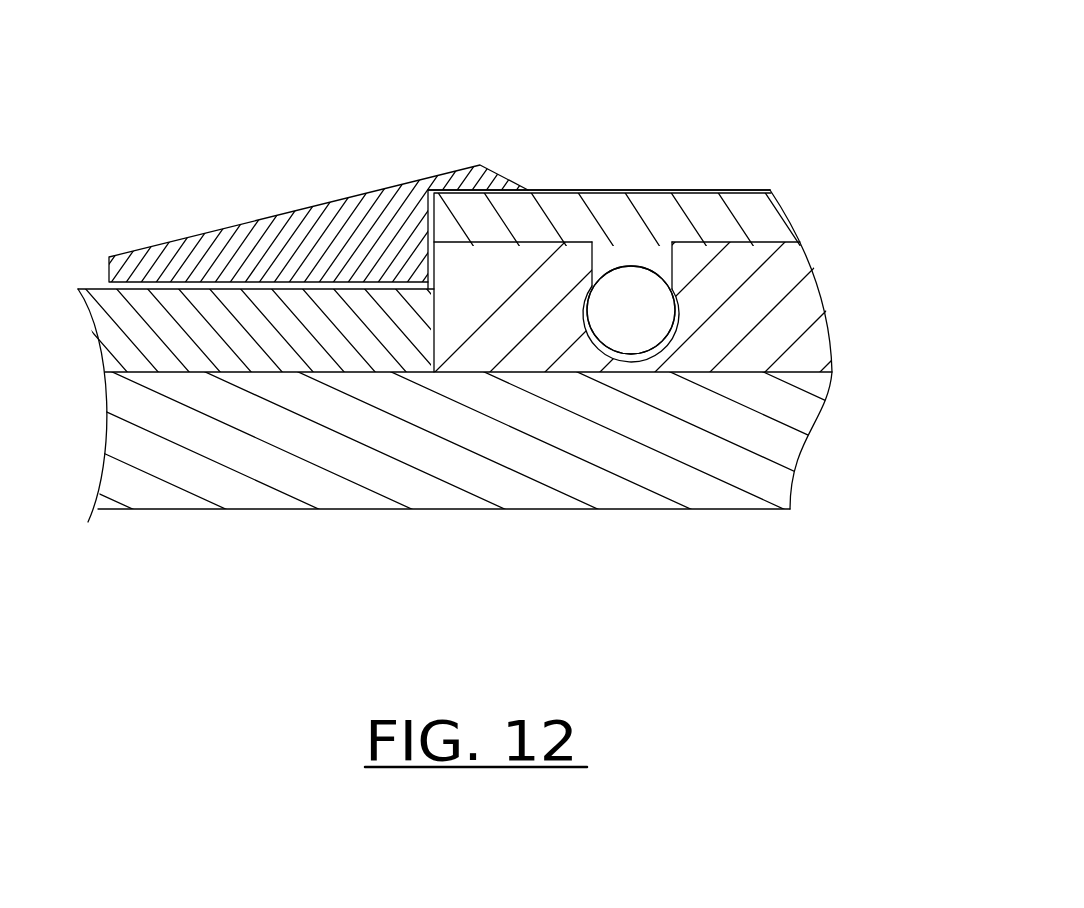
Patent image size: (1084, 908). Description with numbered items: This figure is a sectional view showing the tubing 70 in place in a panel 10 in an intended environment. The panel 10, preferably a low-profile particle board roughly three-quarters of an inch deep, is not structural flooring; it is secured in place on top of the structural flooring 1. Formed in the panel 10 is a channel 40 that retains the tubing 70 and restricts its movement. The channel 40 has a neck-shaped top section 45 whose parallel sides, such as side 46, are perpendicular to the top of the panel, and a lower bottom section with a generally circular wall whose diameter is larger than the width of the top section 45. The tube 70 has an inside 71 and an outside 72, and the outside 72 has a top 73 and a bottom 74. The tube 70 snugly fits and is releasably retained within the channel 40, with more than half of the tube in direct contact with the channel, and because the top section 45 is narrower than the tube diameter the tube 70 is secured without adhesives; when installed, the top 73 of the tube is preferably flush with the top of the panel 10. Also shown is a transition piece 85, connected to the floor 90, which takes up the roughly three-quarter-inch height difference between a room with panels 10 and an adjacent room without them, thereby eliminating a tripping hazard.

The structural flooring 1 is at (507, 480).
The panel 10 is at (803, 305).
The channel 40 is at (672, 263).
The top section 45 is at (612, 266).
The side 46 is at (832, 367).
The tubing 70 is at (643, 266).
The inside 71 is at (583, 334).
The outside 72 is at (626, 267).
The top 73 is at (673, 242).
The bottom 74 is at (612, 345).
The transition piece 85 is at (284, 214).
The floor 90 is at (635, 266).